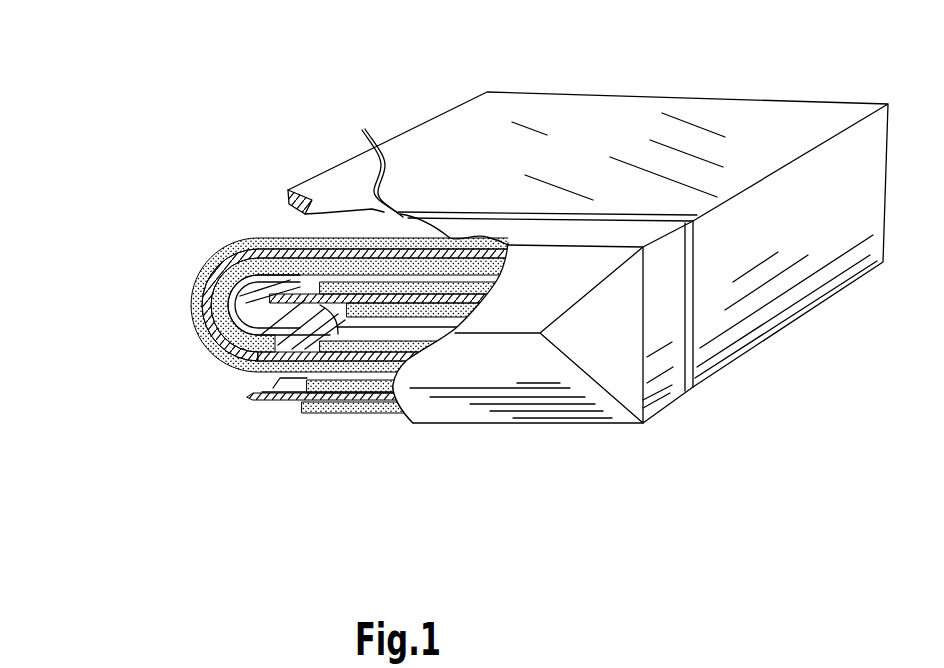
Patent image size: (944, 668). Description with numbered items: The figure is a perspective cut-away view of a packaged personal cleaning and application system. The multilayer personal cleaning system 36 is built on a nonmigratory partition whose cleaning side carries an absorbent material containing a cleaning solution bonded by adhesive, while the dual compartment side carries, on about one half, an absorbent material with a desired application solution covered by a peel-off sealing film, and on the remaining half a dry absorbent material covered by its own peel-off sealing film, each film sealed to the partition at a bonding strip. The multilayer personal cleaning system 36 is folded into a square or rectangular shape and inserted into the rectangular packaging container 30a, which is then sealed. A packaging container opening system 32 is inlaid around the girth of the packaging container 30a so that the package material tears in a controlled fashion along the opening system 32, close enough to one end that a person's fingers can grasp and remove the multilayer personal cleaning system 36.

The rectangular packaging container 30a is at (768, 242).
The packaging container opening system 32 is at (362, 130).
The multilayer personal cleaning system 36 is at (368, 231).